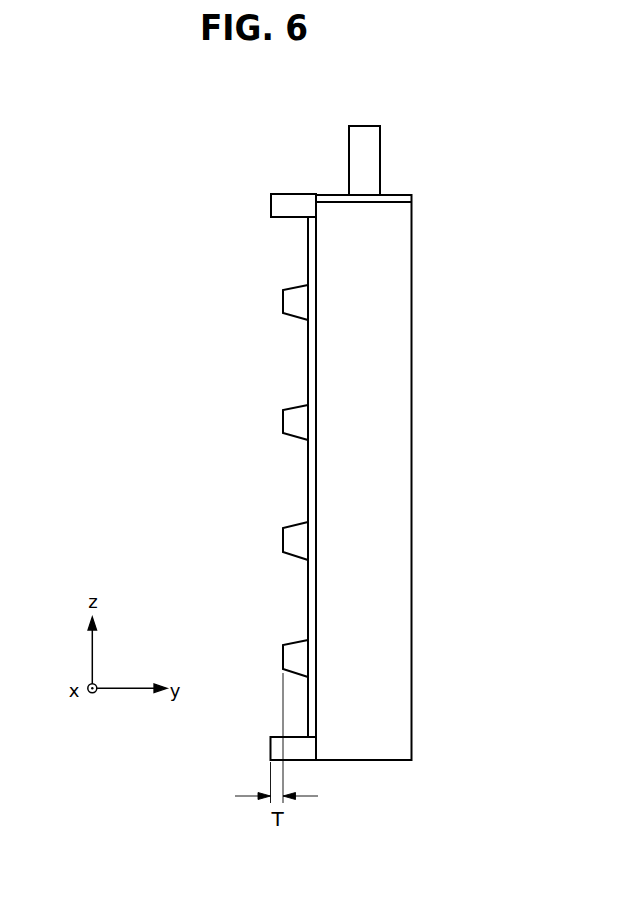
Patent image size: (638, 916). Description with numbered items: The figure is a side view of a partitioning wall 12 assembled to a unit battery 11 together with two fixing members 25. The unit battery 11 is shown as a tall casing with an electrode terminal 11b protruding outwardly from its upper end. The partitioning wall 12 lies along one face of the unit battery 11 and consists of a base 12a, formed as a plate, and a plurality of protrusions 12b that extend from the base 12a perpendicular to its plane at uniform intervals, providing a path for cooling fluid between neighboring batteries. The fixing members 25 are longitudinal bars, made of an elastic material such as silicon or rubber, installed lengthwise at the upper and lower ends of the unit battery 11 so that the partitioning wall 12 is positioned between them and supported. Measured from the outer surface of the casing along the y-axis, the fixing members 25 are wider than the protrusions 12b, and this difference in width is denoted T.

The unit battery 11 is at (368, 760).
The electrode terminal 11b is at (349, 157).
The partitioning wall 12 is at (260, 477).
The base 12a is at (308, 467).
The protrusion 12b is at (283, 422).
The fixing member 25 is at (275, 205).